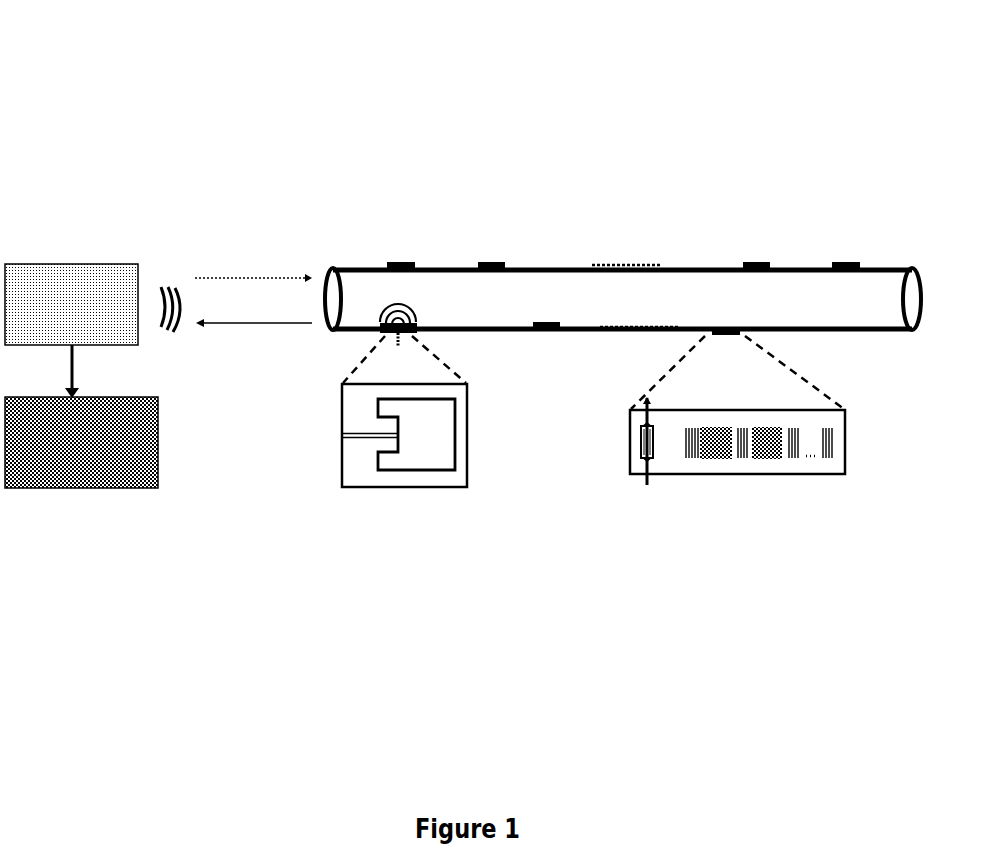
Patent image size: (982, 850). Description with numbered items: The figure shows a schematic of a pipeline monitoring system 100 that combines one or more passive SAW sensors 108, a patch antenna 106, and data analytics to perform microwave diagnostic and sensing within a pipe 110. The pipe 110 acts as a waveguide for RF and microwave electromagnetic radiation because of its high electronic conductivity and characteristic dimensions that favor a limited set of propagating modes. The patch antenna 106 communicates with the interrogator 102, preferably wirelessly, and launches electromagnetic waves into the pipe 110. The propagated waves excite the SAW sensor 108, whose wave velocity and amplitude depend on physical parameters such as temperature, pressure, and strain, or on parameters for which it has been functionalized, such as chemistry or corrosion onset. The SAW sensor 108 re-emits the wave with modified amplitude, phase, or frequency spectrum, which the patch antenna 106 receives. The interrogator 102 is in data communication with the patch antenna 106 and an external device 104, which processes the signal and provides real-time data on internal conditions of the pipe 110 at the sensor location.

The pipeline monitoring system 100 is at (254, 134).
The interrogator 102 is at (138, 287).
The external device 104 is at (158, 440).
The patch antenna 106 is at (465, 440).
The SAW sensor 108 is at (545, 333).
The pipe 110 is at (520, 267).